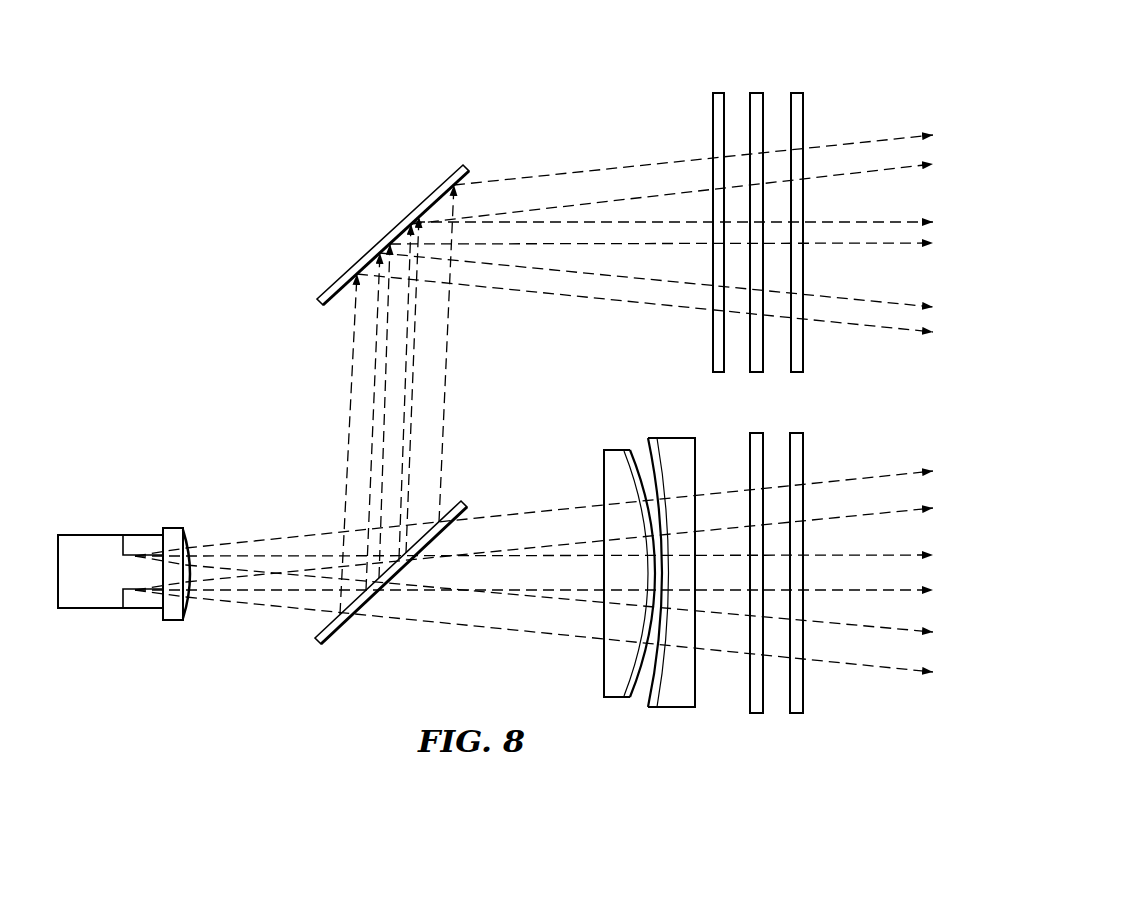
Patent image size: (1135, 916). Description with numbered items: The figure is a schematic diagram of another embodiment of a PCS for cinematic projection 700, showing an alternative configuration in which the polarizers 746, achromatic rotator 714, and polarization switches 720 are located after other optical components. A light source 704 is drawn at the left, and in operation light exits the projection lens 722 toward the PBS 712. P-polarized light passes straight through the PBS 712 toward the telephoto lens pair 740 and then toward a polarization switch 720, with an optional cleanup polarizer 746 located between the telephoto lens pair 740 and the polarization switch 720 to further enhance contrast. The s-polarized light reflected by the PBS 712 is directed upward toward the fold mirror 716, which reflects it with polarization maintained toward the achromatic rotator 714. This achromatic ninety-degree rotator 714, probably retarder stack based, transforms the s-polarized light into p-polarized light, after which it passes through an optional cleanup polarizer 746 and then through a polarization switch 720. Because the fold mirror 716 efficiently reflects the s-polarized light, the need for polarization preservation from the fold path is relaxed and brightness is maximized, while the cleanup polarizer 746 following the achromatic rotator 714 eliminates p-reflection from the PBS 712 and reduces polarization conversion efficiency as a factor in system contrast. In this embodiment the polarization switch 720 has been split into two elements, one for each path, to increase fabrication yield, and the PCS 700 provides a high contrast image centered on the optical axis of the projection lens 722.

The PCS for cinematic projection 700 is at (412, 117).
The light source 704 is at (128, 574).
The projection lens 722 is at (173, 622).
The PBS 712 is at (338, 633).
The fold mirror 716 is at (389, 239).
The telephoto lens pair 740 is at (698, 712).
The achromatic rotator 714 is at (712, 112).
The cleanup polarizer 746 is at (750, 738).
The polarization switch 720 is at (805, 110).